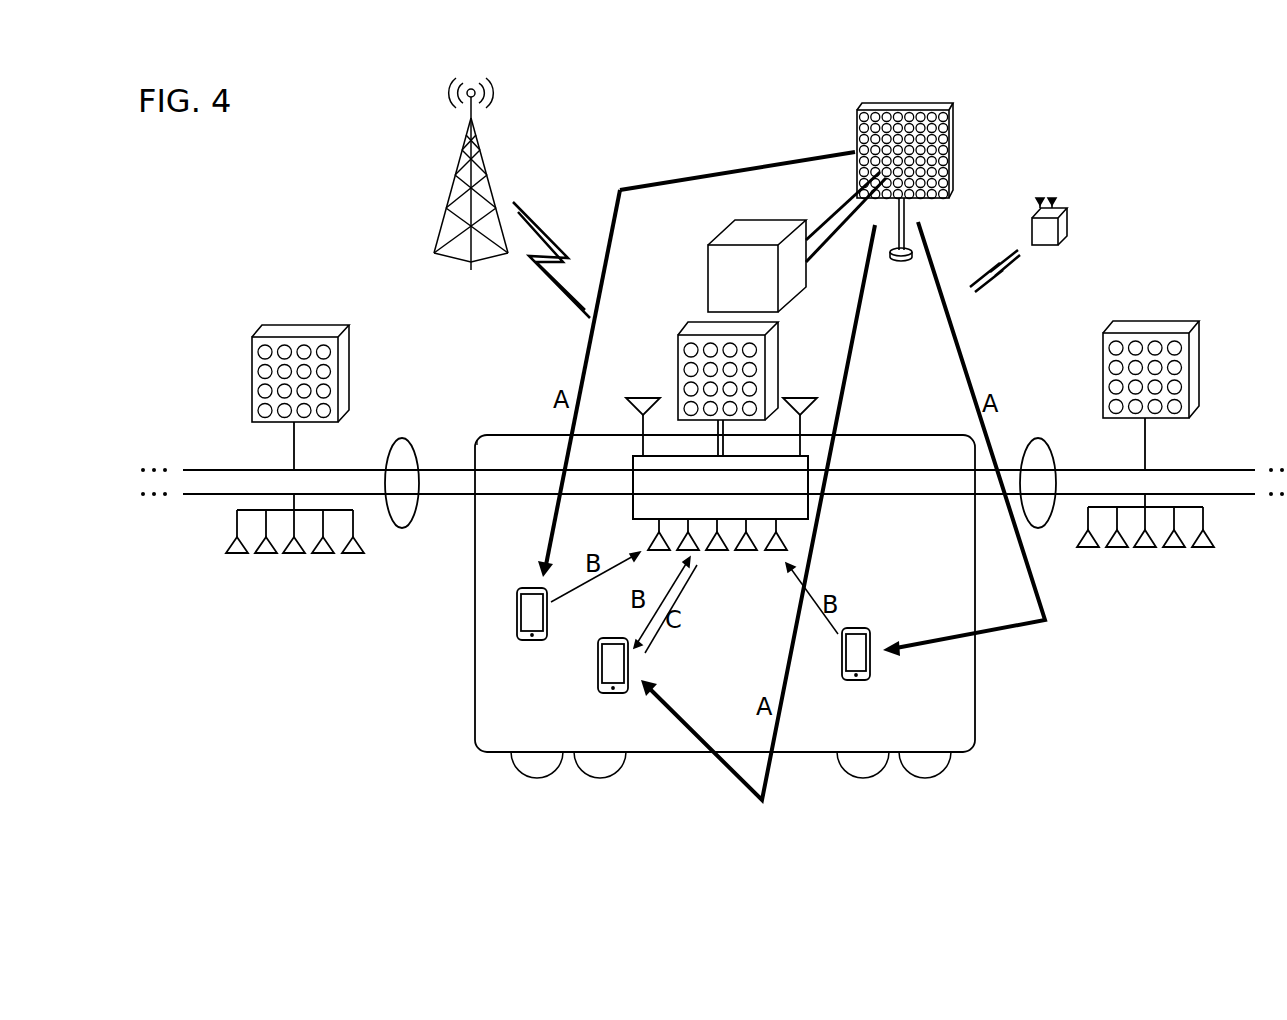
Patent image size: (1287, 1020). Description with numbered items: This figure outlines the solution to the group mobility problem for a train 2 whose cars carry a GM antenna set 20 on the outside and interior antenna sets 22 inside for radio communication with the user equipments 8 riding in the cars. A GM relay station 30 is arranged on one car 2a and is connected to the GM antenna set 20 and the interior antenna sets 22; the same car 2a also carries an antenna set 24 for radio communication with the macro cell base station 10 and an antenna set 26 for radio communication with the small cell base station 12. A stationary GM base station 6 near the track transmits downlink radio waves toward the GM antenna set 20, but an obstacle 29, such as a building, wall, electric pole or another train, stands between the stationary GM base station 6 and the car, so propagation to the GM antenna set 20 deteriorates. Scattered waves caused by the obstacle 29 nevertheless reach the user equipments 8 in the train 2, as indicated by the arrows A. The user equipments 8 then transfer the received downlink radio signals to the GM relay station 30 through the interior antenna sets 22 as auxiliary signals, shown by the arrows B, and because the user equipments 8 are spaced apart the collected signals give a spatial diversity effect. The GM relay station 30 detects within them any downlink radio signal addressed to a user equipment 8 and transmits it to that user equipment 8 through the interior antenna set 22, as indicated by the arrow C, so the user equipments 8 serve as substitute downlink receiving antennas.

The train 2 is at (203, 374).
The car 2a is at (477, 728).
The stationary GM base station 6 is at (857, 138).
The user equipment 8 is at (517, 622).
The macro cell base station 10 is at (460, 170).
The small cell base station 12 is at (1068, 205).
The GM antenna set 20 is at (345, 364).
The interior antenna set 22 is at (336, 556).
The antenna set 24 is at (628, 398).
The antenna set 26 is at (830, 382).
The obstacle 29 is at (735, 226).
The GM relay station 30 is at (818, 512).